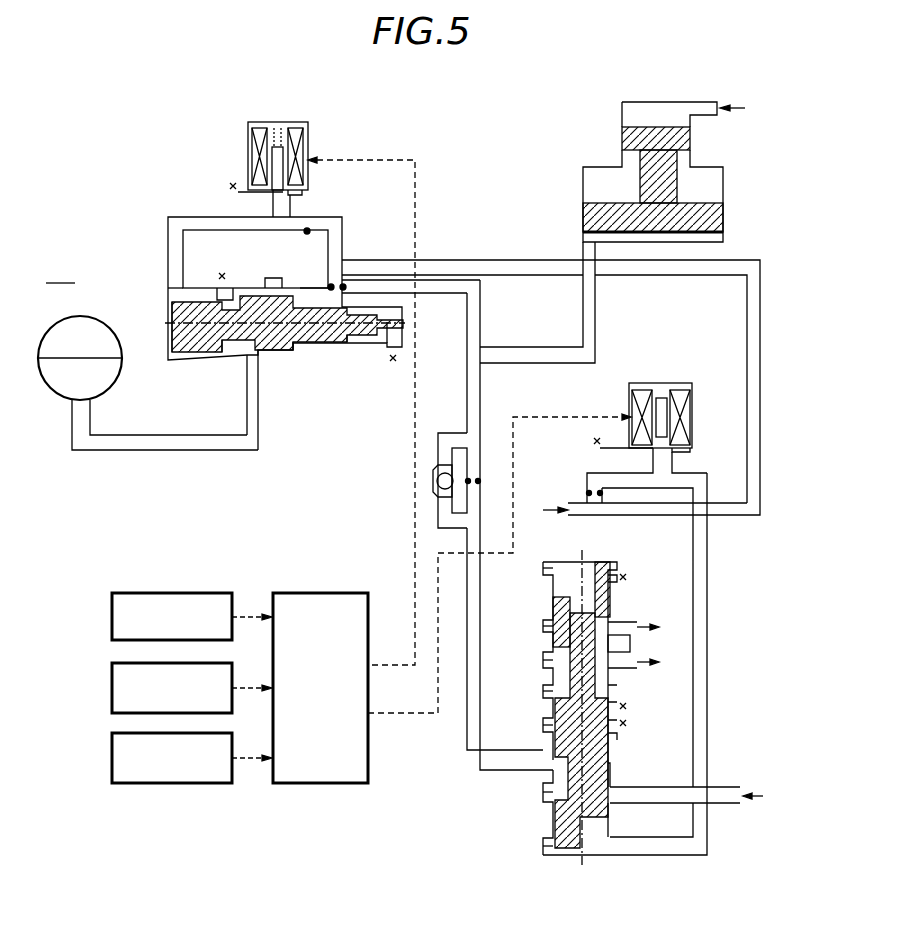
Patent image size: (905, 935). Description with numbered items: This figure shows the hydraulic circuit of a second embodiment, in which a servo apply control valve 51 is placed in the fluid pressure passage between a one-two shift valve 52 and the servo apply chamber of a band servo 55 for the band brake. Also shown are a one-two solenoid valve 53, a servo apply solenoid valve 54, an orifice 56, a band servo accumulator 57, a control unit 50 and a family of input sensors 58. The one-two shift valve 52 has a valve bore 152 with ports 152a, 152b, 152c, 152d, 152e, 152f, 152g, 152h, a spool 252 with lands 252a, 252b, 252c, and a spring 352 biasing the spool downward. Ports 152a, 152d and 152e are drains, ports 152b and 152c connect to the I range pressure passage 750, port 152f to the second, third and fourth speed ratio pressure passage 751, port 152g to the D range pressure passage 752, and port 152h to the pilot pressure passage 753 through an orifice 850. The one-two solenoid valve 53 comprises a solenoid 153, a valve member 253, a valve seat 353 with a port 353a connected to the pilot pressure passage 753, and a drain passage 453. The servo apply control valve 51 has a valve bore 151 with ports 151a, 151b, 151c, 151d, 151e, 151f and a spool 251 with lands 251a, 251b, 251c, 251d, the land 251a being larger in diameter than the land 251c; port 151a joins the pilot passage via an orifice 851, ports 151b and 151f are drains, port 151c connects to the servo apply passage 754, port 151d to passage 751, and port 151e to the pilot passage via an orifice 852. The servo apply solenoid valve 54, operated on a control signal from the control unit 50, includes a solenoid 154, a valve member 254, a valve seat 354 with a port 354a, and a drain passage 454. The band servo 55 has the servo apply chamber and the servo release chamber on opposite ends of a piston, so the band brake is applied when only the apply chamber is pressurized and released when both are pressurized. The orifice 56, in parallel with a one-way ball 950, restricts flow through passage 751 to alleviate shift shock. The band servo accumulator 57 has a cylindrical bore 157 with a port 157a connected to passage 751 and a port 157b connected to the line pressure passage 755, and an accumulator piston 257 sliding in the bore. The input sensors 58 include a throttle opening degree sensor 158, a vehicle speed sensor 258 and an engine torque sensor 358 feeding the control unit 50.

The control unit 50 is at (324, 579).
The servo apply control valve 51 is at (148, 338).
The 1-2 shift valve 52 is at (589, 549).
The 1-2 solenoid valve 53 is at (671, 374).
The servo apply solenoid valve 54 is at (287, 111).
The band servo 55 is at (40, 335).
The orifice 56 is at (478, 478).
The band servo accumulator 57 is at (669, 91).
The input sensors 58 is at (177, 579).
The valve bore 151 is at (176, 300).
The port 151a is at (178, 284).
The port 151b is at (227, 282).
The port 151c is at (252, 362).
The port 151d is at (273, 290).
The port 151e is at (330, 298).
The port 151f is at (390, 364).
The valve bore 152 is at (556, 586).
The port 152a is at (543, 571).
The port 152b is at (543, 624).
The port 152c is at (545, 660).
The port 152d is at (545, 690).
The port 152e is at (545, 722).
The port 152f is at (552, 760).
The port 152g is at (545, 795).
The port 152h is at (545, 842).
The solenoid 153 is at (682, 400).
The solenoid 154 is at (298, 134).
The cylindrical bore 157 is at (722, 185).
The port 157a is at (581, 252).
The port 157b is at (690, 112).
The throttle opening degree sensor 158 is at (112, 606).
The spool 251 is at (180, 350).
The land 251a is at (190, 365).
The land 251b is at (222, 368).
The land 251c is at (290, 352).
The land 251d is at (338, 350).
The spool 252 is at (575, 848).
The land 252a is at (612, 598).
The land 252b is at (612, 678).
The land 252c is at (606, 782).
The valve member 253 is at (668, 418).
The valve member 254 is at (283, 158).
The accumulator piston 257 is at (688, 138).
The vehicle speed sensor 258 is at (112, 677).
The spring 352 is at (630, 584).
The valve seat 353 is at (688, 448).
The port 353a is at (660, 450).
The valve seat 354 is at (302, 192).
The port 354a is at (273, 198).
The engine torque sensor 358 is at (112, 748).
The drain passage 453 is at (610, 440).
The drain passage 454 is at (244, 178).
The I range pressure passage 750 is at (632, 650).
The 2nd, 3rd, and 4th speed ratio pressure passage 751 is at (466, 745).
The D range pressure passage 752 is at (728, 786).
The pilot pressure passage 753 is at (497, 258).
The servo apply passage 754 is at (192, 452).
The line pressure passage 755 is at (714, 118).
The orifice 850 is at (588, 492).
The orifice 851 is at (306, 228).
The orifice 852 is at (335, 284).
The one-way ball 950 is at (440, 464).